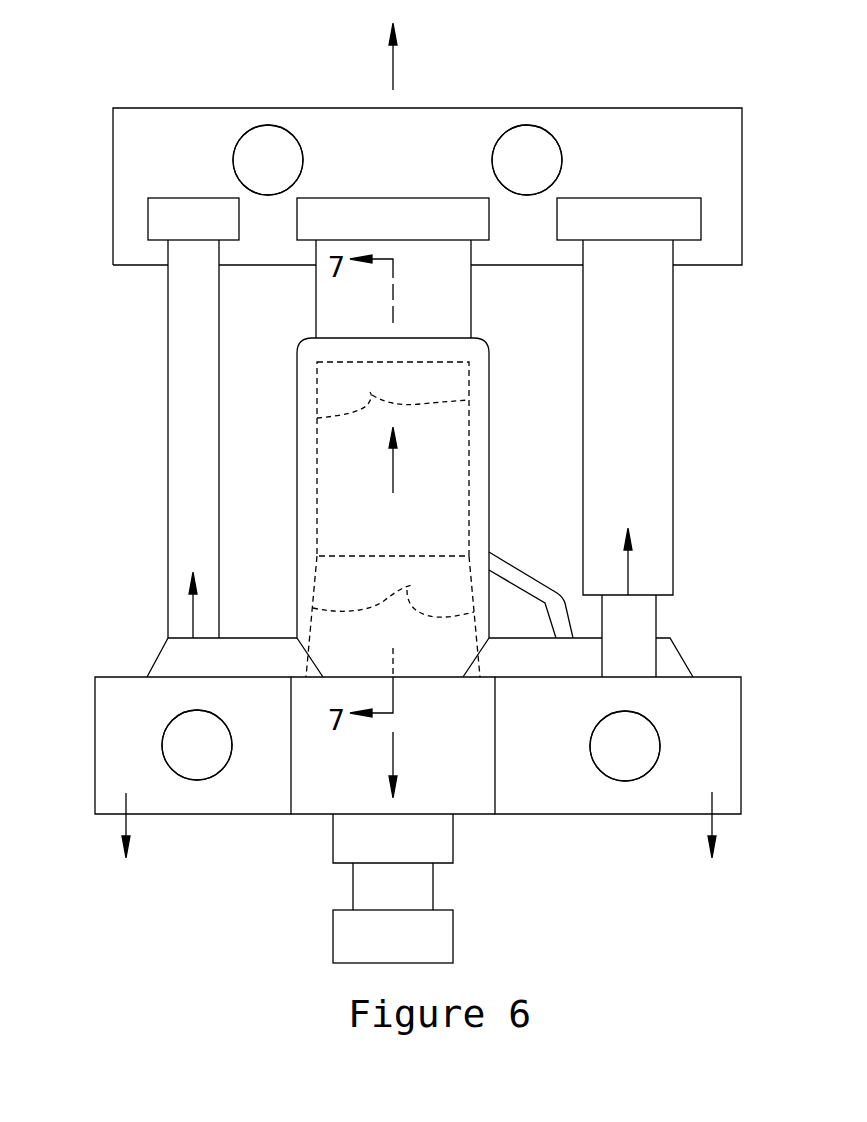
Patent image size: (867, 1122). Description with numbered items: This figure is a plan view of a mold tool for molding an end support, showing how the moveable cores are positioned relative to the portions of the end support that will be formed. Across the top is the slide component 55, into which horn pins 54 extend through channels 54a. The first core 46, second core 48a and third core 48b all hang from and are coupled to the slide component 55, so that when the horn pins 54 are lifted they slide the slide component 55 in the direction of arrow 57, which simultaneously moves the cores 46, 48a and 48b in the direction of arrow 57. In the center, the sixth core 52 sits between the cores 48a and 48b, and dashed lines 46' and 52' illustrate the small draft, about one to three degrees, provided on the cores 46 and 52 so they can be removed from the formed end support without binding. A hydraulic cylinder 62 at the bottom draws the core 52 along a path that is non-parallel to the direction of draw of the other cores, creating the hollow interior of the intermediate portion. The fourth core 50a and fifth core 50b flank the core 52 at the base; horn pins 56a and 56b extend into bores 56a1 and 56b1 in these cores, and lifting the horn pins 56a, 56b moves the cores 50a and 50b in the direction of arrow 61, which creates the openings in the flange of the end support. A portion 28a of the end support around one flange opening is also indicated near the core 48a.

The slide component 55 is at (628, 125).
The horn pins 54 is at (277, 147).
The channels 54a is at (233, 155).
The first core 46 is at (393, 213).
The arrow 57 is at (393, 63).
The second core 48a is at (178, 367).
The third core 48b is at (662, 402).
The sixth core 52 is at (435, 605).
The dashed lines 46' is at (393, 437).
The dashed lines 52' is at (393, 598).
The portion 28a is at (158, 668).
The fourth core 50a is at (125, 757).
The fifth core 50b is at (547, 795).
The horn pin 56a is at (177, 733).
The bore 56a1 is at (207, 777).
The horn pin 56b is at (635, 752).
The bore 56b1 is at (637, 717).
The arrow 61 is at (123, 824).
The hydraulic cylinder 62 is at (345, 949).